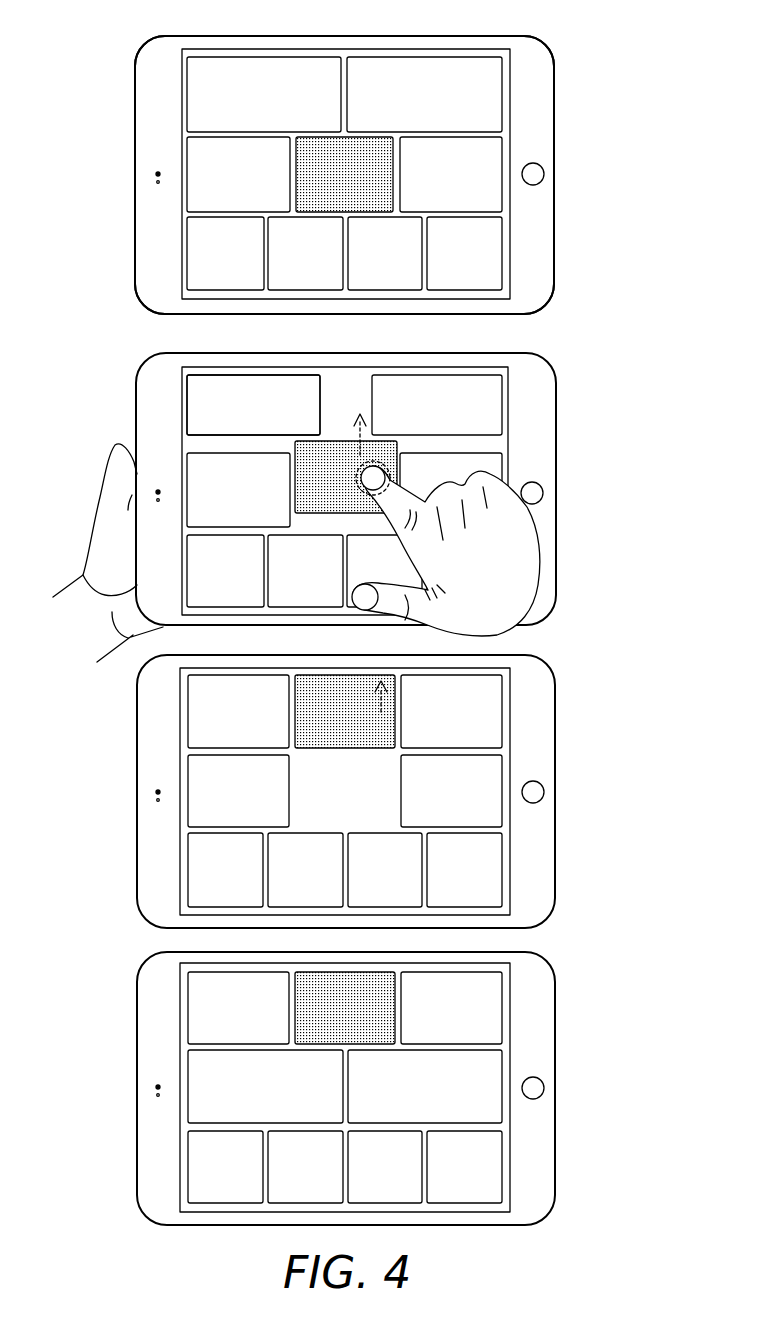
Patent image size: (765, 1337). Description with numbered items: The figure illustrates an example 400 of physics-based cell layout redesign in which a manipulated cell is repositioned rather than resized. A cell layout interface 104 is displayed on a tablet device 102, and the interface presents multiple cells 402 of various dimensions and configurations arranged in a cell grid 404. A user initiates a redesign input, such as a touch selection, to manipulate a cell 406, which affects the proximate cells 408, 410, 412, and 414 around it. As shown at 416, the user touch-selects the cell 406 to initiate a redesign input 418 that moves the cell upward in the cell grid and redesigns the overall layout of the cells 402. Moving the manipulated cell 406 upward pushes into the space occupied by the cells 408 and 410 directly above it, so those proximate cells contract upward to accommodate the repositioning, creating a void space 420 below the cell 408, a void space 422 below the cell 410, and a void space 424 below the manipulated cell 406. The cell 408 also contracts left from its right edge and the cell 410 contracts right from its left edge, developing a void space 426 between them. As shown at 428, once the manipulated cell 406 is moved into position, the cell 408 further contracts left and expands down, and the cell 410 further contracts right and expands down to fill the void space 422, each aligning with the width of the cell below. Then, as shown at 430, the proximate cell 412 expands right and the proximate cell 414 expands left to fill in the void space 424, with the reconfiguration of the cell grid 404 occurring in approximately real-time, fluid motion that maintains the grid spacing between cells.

The tablet device 102 is at (137, 170).
The cell layout interface 104 is at (180, 195).
The example of physics-based cell layout redesign 400 is at (577, 101).
The cells 402 is at (440, 278).
The cell grid 404 is at (187, 120).
The manipulated cell 406 is at (328, 184).
The proximate cell 408 is at (248, 105).
The proximate cell 410 is at (407, 105).
The proximate cell 412 is at (220, 184).
The proximate cell 414 is at (435, 184).
The touch-select view 416 is at (577, 418).
The redesign input 418 is at (368, 452).
The void space 420 is at (238, 442).
The void space 422 is at (453, 442).
The void space 424 is at (330, 522).
The void space 426 is at (329, 398).
The repositioned view 428 is at (577, 718).
The final layout view 430 is at (577, 1028).